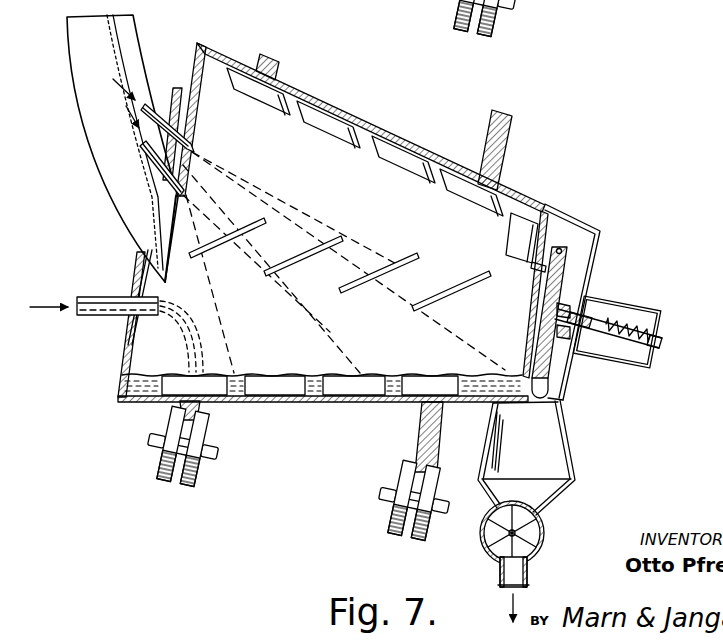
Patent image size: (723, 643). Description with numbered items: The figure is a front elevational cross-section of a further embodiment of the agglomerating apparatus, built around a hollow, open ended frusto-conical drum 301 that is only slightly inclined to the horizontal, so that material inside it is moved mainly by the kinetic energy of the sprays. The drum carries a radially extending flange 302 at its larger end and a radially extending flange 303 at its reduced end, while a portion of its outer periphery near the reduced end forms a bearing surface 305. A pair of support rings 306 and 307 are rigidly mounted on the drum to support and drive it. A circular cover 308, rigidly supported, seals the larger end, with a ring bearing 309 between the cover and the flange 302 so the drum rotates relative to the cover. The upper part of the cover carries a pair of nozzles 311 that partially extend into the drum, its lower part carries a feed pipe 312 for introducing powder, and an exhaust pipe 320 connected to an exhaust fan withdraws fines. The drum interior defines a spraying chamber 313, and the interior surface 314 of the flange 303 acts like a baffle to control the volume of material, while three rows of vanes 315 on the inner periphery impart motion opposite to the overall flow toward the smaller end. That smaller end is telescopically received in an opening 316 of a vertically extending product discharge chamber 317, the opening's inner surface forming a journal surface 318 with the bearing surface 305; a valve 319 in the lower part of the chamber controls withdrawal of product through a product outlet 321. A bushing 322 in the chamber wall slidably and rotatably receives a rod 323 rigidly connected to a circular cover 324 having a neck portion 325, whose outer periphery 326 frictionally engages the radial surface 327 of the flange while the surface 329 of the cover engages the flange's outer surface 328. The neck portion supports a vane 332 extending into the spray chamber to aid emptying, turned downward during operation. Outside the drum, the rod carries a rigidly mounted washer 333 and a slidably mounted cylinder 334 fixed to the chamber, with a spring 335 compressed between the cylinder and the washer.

The frusto-conical drum 301 is at (400, 112).
The radially extending flange 302 is at (199, 45).
The radially extending flange 303 is at (546, 232).
The bearing surface 305 is at (544, 211).
The support ring 306 is at (273, 53).
The support ring 307 is at (507, 106).
The circular cover 308 is at (136, 266).
The ring bearing 309 is at (178, 88).
The nozzles 311 is at (189, 180).
The feed pipe 312 is at (97, 316).
The spraying chamber 313 is at (405, 231).
The interior surface 314 is at (470, 403).
The vanes 315 is at (375, 165).
The opening 316 is at (499, 414).
The product discharge chamber 317 is at (580, 459).
The journal surface 318 is at (510, 403).
The valve 319 is at (545, 531).
The exhaust pipe 320 is at (95, 147).
The product outlet 321 is at (500, 572).
The bushing 322 is at (588, 298).
The rod 323 is at (663, 343).
The circular cover 324 is at (568, 252).
The neck portion 325 is at (562, 244).
The outer periphery 326 is at (496, 375).
The radial surface 327 is at (536, 268).
The outer surface 328 is at (549, 401).
The surface 329 is at (549, 393).
The vane 332 is at (511, 243).
The washer 333 is at (571, 308).
The cylinder 334 is at (650, 308).
The spring 335 is at (636, 312).